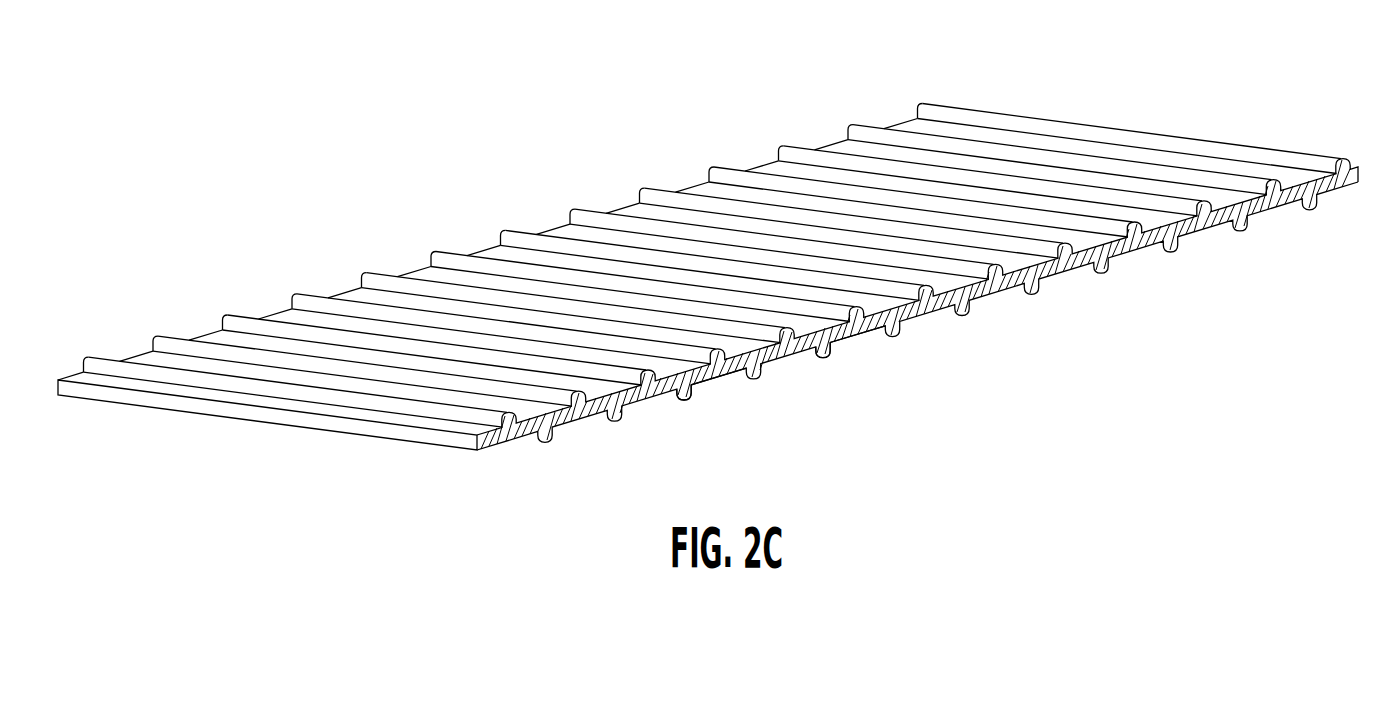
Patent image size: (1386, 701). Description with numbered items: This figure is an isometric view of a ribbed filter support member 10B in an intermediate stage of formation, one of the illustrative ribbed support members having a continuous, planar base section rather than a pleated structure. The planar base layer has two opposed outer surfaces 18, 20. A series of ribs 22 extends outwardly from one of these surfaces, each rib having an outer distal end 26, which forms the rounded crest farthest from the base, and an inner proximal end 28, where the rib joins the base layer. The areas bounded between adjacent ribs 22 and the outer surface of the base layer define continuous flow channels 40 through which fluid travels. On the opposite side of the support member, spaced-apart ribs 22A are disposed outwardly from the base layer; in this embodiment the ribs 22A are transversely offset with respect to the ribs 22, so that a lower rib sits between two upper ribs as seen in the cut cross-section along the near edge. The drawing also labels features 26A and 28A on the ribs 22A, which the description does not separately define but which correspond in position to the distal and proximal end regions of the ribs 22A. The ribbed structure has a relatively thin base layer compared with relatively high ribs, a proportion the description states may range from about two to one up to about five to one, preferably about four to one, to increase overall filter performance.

The ribbed filter support member 10B is at (952, 96).
The outer surface 18 is at (502, 459).
The outer surface 20 is at (407, 267).
The ribs 22 is at (512, 231).
The outer distal end 26 is at (300, 294).
The inner proximal end 28 is at (292, 309).
The continuous flow channels 40 is at (1292, 176).
The spaced-apart ribs 22A is at (1035, 293).
The lower ridge lobes 26A is at (688, 398).
The lower grooves 28A is at (694, 389).